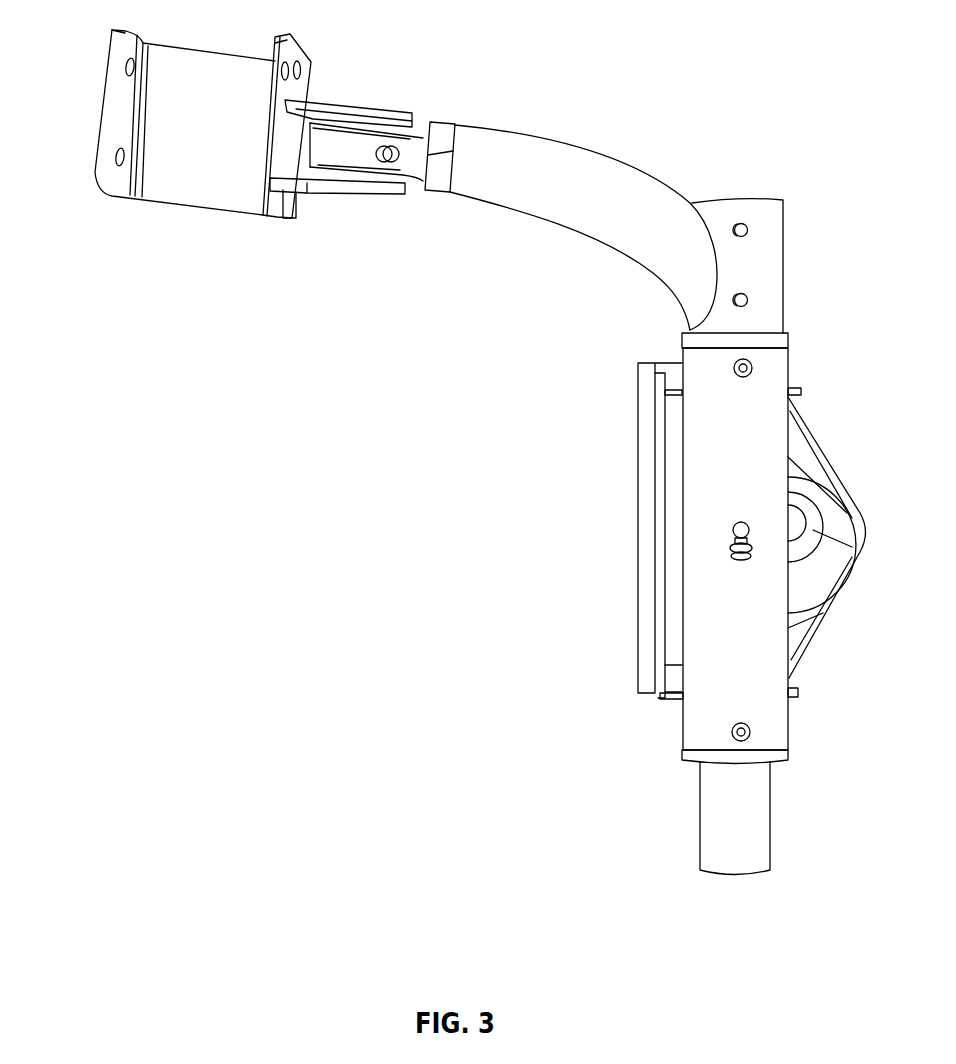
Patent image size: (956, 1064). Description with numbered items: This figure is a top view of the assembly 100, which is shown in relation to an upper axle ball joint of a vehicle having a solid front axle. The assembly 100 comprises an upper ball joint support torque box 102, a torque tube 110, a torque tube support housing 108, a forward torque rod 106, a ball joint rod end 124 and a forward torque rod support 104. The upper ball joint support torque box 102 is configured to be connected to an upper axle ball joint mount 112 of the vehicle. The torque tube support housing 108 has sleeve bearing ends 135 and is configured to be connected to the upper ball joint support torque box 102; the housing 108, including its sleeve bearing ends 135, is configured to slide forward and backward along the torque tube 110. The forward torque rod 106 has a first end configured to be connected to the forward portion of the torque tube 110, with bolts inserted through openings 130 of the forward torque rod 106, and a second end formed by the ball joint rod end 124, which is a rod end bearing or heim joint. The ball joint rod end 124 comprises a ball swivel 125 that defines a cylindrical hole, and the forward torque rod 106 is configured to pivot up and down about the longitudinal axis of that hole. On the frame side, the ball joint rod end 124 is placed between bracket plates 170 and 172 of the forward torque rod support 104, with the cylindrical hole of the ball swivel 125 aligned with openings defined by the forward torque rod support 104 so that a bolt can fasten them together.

The assembly 100 is at (348, 530).
The upper ball joint support torque box 102 is at (638, 527).
The forward torque rod support 104 is at (100, 103).
The forward torque rod 106 is at (568, 140).
The torque tube support housing 108 is at (763, 445).
The torque tube 110 is at (770, 810).
The upper axle ball joint mount 112 is at (812, 523).
The ball joint rod end 124 is at (427, 130).
The ball swivel 125 is at (340, 173).
The openings 130 is at (738, 222).
The sleeve bearing ends 135 is at (775, 342).
The bracket plate 170 is at (382, 110).
The bracket plate 172 is at (358, 194).